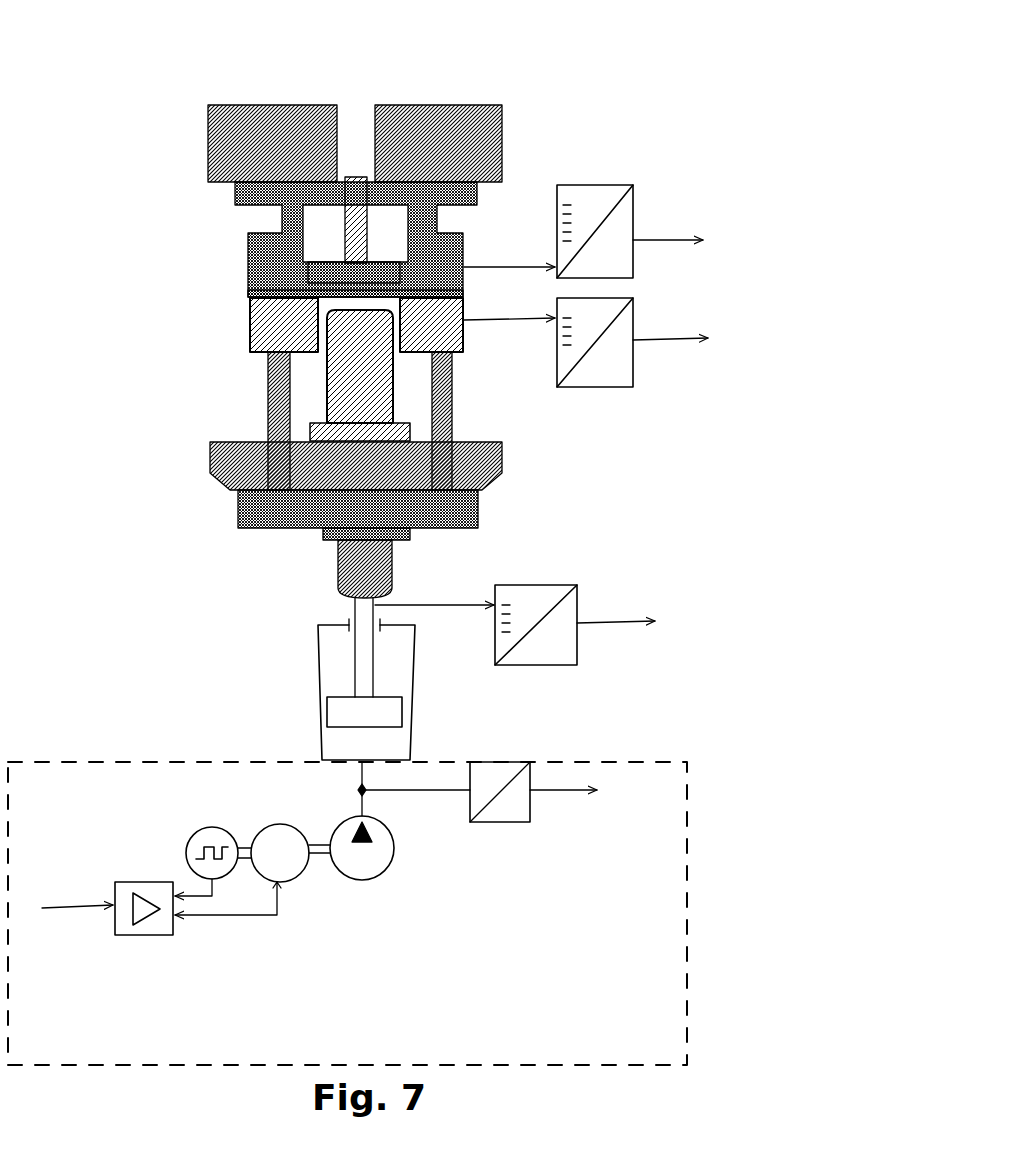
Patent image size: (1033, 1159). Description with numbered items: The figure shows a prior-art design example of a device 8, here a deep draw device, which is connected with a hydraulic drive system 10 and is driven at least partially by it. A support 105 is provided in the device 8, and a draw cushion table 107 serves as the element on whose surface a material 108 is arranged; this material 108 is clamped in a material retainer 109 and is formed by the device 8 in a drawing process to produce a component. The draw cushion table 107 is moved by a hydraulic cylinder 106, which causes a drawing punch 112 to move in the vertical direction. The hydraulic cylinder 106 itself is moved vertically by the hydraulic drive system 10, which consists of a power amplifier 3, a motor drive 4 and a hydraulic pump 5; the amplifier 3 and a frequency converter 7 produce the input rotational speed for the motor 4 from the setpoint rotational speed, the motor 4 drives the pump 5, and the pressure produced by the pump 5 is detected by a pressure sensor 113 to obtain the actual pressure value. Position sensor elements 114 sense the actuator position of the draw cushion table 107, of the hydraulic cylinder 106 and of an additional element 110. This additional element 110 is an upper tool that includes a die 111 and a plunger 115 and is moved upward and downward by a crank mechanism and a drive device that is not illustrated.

The device 8 is at (105, 103).
The additional element 110 is at (236, 125).
The plunger 115 is at (358, 205).
The die 111 is at (248, 272).
The material 108 is at (250, 294).
The material retainer 109 is at (250, 323).
The drawing punch 112 is at (343, 383).
The support 105 is at (212, 470).
The draw cushion table 107 is at (245, 530).
The hydraulic cylinder 106 is at (325, 690).
The position sensor element 114 is at (587, 185).
The hydraulic drive system 10 is at (55, 762).
The frequency converter 7 is at (203, 836).
The motor drive 4 is at (270, 830).
The hydraulic pump 5 is at (386, 850).
The pressure sensor 113 is at (520, 822).
The power amplifier 3 is at (148, 935).